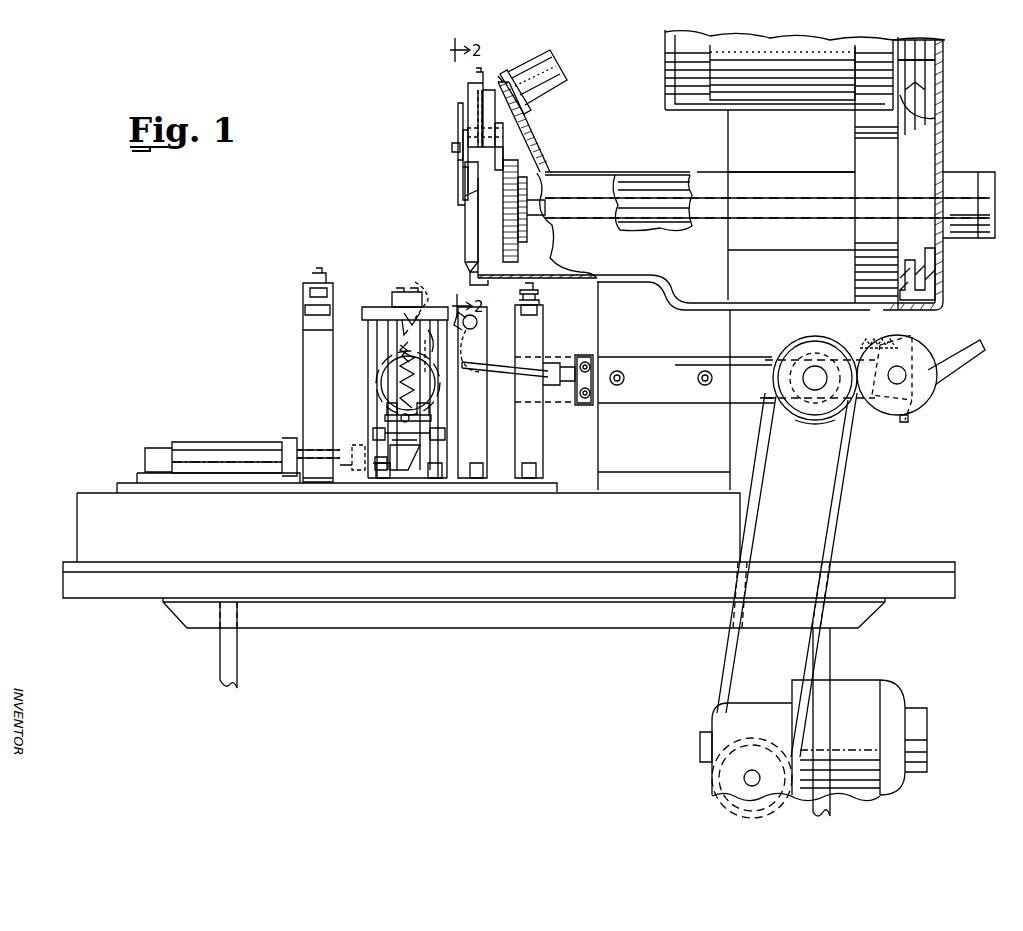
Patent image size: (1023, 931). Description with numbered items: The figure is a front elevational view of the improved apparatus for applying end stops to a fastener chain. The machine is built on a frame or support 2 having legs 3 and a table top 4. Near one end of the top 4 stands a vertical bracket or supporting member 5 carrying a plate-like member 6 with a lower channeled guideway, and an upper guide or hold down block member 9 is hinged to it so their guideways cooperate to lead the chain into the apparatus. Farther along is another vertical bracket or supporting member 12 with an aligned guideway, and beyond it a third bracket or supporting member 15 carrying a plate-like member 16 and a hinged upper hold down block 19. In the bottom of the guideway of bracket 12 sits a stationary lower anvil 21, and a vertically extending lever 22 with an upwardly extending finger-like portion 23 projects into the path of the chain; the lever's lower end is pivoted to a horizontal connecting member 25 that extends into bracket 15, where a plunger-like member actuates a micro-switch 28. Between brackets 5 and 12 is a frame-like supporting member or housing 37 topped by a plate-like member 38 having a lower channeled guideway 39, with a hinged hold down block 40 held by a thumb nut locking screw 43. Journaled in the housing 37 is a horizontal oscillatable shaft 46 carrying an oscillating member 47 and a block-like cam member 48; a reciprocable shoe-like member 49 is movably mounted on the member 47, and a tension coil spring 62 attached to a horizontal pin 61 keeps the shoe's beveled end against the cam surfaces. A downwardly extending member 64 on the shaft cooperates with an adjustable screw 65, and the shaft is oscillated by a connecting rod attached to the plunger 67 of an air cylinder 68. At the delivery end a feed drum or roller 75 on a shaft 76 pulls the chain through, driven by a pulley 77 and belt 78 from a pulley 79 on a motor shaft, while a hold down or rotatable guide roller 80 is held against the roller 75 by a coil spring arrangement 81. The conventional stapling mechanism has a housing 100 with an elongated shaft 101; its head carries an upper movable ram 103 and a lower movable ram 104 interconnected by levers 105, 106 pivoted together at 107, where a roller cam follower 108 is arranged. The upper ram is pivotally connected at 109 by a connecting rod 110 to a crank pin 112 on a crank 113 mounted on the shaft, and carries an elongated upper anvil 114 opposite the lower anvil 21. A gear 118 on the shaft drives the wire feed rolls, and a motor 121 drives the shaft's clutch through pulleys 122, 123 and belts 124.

The frame or support 2 is at (902, 567).
The legs 3 is at (231, 664).
The table top 4 is at (737, 497).
The vertical bracket or supporting member 5 is at (303, 369).
The plate-like member 6 is at (303, 311).
The upper guide or hold down block member 9 is at (330, 290).
The vertical bracket or supporting member 12 is at (486, 425).
The vertical bracket or supporting member 15 is at (541, 450).
The plate-like member 16 is at (538, 309).
The upper guide or hold down block 19 is at (538, 292).
The stationary lower anvil 21 is at (478, 318).
The vertically extending lever 22 is at (451, 336).
The finger-like portion 23 is at (420, 315).
The horizontal connecting member 25 is at (497, 369).
The micro-switch 28 is at (584, 355).
The frame-like supporting member or housing 37 is at (442, 470).
The plate-like member 38 is at (368, 321).
The lower channeled guideway 39 is at (414, 293).
The plate-like guide or hold down block 40 is at (366, 312).
The thumb nut locking screw 43 is at (393, 304).
The horizontal oscillatable shaft 46 is at (400, 385).
The oscillating member 47 is at (385, 372).
The block-like cam member 48 is at (432, 356).
The reciprocable shoe-like member 49 is at (432, 334).
The horizontal pin 61 is at (400, 350).
The tension coil spring 62 is at (395, 404).
The downwardly extending member 64 is at (400, 468).
The adjustable screw 65 is at (376, 468).
The plunger 67 is at (365, 448).
The air cylinder 68 is at (212, 454).
The feed drum or roller 75 is at (822, 412).
The shaft 76 is at (810, 370).
The pulley 77 is at (800, 418).
The belt 78 is at (837, 515).
The pulley 79 is at (720, 770).
The hold down or rotatable guide roller 80 is at (928, 355).
The coil spring arrangement 81 is at (858, 345).
The housing 100 is at (590, 180).
The elongated shaft 101 is at (640, 207).
The upper movable ram 103 is at (468, 88).
The lower movable ram 104 is at (466, 242).
The lever 105 is at (459, 114).
The lever 106 is at (462, 188).
The pivotal interconnection 107 is at (462, 138).
The roller cam follower 108 is at (452, 149).
The pivotal connection 109 is at (506, 131).
The connecting rod 110 is at (499, 151).
The crank pin 112 is at (510, 163).
The crank 113 is at (508, 250).
The elongated upper anvil 114 is at (468, 200).
The gear 118 is at (526, 240).
The motor 121 is at (718, 96).
The pulley 122 is at (938, 52).
The pulley 123 is at (930, 282).
The belts 124 is at (912, 83).